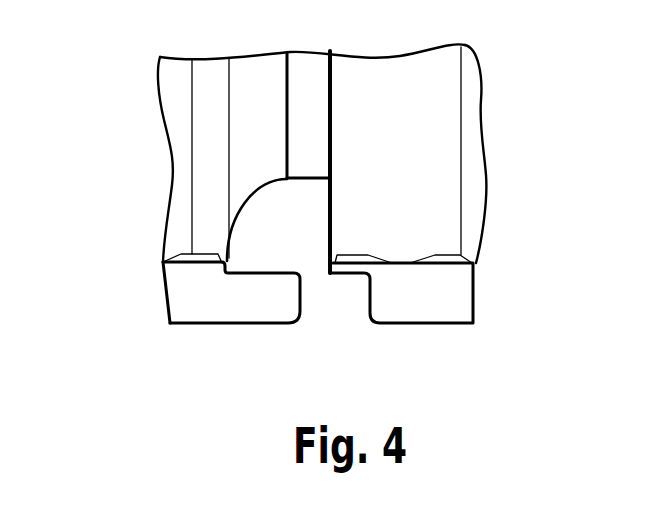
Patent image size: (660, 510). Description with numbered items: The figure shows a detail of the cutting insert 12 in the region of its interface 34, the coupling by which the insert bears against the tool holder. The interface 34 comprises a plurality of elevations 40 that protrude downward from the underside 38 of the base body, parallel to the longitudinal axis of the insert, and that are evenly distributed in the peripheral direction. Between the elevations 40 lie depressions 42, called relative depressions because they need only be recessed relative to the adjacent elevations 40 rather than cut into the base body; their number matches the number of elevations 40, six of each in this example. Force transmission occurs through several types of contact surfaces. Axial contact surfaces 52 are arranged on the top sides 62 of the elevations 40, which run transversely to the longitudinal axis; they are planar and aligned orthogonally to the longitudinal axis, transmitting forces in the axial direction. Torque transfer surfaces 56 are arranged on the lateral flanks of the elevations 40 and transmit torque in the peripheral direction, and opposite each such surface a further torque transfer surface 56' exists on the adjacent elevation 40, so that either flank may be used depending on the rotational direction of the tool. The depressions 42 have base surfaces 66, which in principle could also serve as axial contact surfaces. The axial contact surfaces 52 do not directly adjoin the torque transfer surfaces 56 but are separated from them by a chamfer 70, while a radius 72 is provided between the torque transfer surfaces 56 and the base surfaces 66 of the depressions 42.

The cutting insert 12 is at (544, 153).
The radius 72 is at (297, 272).
The base surfaces 66 is at (363, 262).
The elevations 40 is at (193, 294).
The interface 34 is at (322, 346).
The chamfer 70 is at (297, 306).
The underside 38 is at (466, 338).
The axial contact surfaces 52 is at (205, 338).
The top sides 62 is at (417, 338).
The depressions 42 is at (332, 300).
The torque transfer surfaces 56 is at (363, 337).
The further torque transfer surface 56' is at (291, 347).